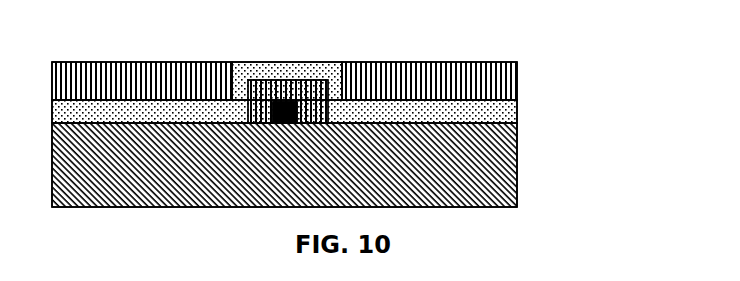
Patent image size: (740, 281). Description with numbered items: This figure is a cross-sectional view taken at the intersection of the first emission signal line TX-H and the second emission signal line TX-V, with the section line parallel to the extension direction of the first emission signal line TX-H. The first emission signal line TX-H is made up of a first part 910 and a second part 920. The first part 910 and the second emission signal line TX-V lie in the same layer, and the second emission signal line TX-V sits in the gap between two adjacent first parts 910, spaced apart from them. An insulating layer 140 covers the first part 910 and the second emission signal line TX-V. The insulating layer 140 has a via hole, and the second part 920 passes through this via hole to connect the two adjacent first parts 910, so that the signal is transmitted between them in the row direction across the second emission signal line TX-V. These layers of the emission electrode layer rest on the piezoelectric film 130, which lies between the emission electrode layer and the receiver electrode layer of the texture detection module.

The first part 910 is at (160, 110).
The second part 920 is at (253, 68).
The second emission signal line TX-V is at (285, 95).
The insulating layer 140 is at (495, 90).
The first emission signal line TX-H is at (495, 117).
The piezoelectric film 130 is at (517, 160).